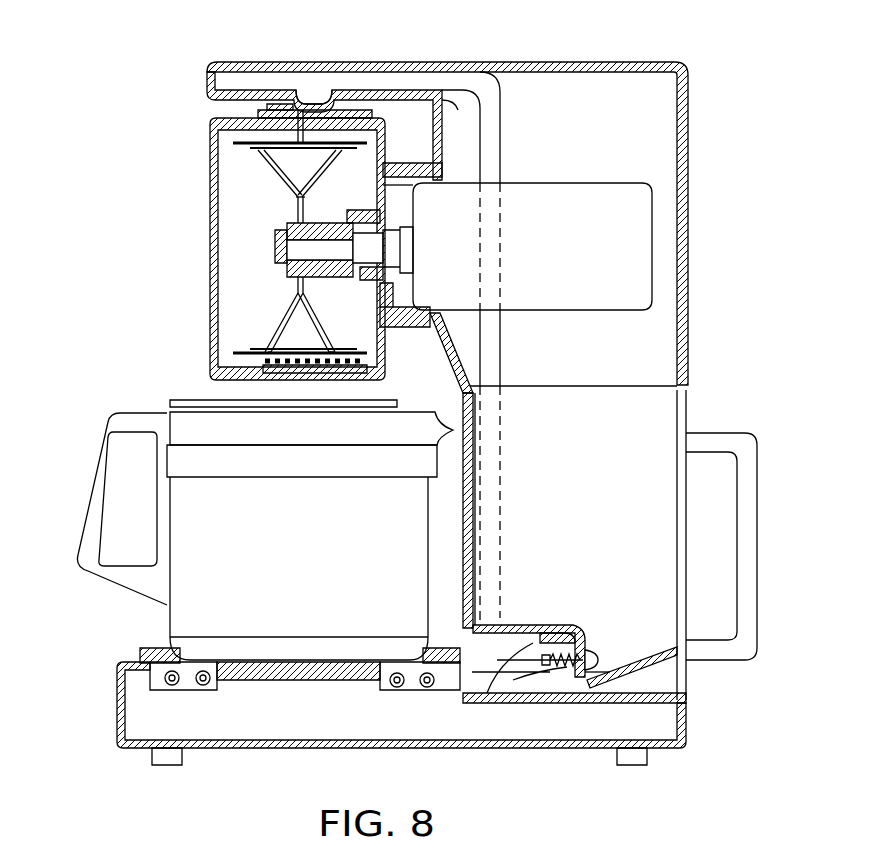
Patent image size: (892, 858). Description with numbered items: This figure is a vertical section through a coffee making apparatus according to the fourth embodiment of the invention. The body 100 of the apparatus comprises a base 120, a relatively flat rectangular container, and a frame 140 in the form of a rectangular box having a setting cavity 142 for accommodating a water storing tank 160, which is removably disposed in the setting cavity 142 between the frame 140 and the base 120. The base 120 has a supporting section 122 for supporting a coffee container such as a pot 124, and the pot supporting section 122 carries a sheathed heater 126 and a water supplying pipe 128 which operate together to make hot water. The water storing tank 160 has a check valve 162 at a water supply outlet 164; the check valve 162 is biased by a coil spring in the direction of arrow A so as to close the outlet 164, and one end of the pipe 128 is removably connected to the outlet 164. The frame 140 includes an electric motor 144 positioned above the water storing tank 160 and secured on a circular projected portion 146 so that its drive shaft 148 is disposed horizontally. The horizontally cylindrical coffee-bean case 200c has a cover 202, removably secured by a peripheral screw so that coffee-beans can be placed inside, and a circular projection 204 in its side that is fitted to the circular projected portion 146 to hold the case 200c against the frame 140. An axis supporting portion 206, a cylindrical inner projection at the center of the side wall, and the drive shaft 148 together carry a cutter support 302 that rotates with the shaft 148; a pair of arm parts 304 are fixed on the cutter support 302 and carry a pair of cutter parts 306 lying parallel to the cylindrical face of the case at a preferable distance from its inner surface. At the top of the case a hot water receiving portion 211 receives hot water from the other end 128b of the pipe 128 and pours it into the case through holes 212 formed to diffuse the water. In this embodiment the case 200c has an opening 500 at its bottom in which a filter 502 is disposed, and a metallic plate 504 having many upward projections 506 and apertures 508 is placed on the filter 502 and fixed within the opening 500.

The body 100 is at (694, 348).
The base 120 is at (117, 718).
The supporting section 122 is at (318, 670).
The pot 124 is at (170, 533).
The sheathed heater 126 is at (203, 686).
The water supplying pipe 128 is at (430, 72).
The other end of the water supplying pipe 128b is at (330, 106).
The frame 140 is at (683, 120).
The setting cavity 142 is at (643, 681).
The electric motor 144 is at (565, 303).
The circular projected portion 146 is at (412, 166).
The drive shaft 148 is at (310, 245).
The water storing tank 160 is at (686, 593).
The check valve 162 is at (602, 650).
The water supply outlet 164 is at (567, 677).
The case 200c is at (206, 233).
The cover 202 is at (210, 263).
The circular projection 204 is at (442, 158).
The axis supporting portion 206 is at (370, 196).
The hot water receiving portion 211 is at (276, 103).
The holes 212 is at (296, 117).
The cutter support 302 is at (320, 222).
The arm parts 304 is at (284, 170).
The cutter parts 306 is at (262, 150).
The opening 500 is at (278, 382).
The filter 502 is at (328, 382).
The metallic plate 504 is at (305, 346).
The upward projections 506 is at (320, 360).
The apertures 508 is at (345, 338).
The arrow A is at (612, 647).